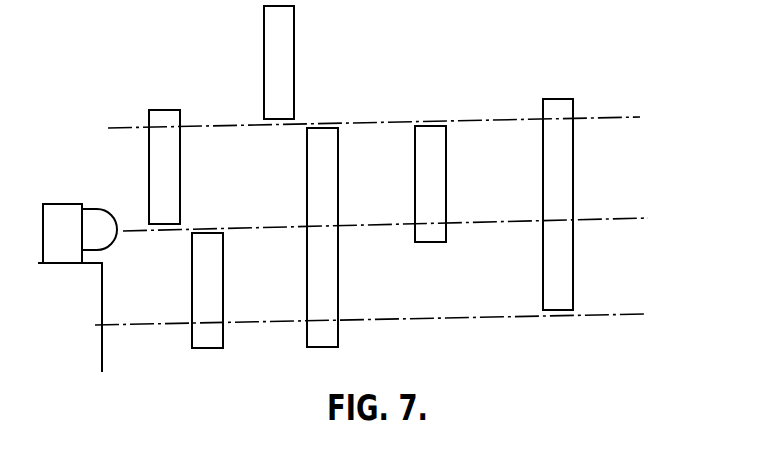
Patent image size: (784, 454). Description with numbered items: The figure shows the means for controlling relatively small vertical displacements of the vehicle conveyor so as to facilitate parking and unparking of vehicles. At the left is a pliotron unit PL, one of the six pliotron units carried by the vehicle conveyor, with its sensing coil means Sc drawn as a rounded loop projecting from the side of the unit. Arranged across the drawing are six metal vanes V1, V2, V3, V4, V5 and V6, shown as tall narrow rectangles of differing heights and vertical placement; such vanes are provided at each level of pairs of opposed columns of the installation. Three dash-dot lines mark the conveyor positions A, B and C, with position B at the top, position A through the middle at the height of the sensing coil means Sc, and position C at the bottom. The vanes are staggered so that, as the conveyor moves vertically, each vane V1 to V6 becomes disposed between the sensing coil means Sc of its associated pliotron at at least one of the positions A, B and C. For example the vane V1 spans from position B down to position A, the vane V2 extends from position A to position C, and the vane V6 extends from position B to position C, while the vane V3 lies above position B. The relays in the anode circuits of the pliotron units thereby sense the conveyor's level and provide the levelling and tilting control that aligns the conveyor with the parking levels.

The metal vane V1 is at (180, 118).
The metal vane V2 is at (216, 297).
The metal vane V3 is at (288, 77).
The metal vane V4 is at (334, 220).
The metal vane V5 is at (440, 214).
The metal vane V6 is at (567, 198).
The pliotron unit PL is at (70, 203).
The sensing coil means Sc is at (102, 217).
The conveyor position A is at (385, 215).
The conveyor position B is at (374, 109).
The conveyor position C is at (370, 310).